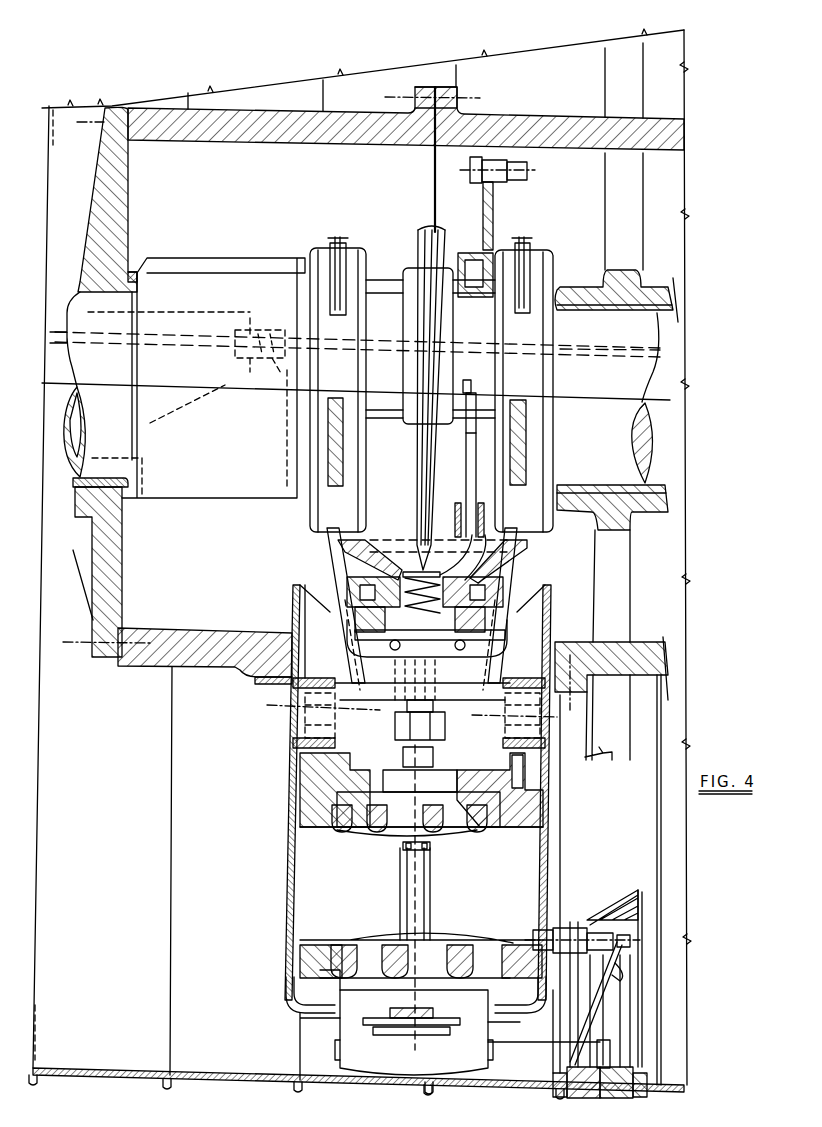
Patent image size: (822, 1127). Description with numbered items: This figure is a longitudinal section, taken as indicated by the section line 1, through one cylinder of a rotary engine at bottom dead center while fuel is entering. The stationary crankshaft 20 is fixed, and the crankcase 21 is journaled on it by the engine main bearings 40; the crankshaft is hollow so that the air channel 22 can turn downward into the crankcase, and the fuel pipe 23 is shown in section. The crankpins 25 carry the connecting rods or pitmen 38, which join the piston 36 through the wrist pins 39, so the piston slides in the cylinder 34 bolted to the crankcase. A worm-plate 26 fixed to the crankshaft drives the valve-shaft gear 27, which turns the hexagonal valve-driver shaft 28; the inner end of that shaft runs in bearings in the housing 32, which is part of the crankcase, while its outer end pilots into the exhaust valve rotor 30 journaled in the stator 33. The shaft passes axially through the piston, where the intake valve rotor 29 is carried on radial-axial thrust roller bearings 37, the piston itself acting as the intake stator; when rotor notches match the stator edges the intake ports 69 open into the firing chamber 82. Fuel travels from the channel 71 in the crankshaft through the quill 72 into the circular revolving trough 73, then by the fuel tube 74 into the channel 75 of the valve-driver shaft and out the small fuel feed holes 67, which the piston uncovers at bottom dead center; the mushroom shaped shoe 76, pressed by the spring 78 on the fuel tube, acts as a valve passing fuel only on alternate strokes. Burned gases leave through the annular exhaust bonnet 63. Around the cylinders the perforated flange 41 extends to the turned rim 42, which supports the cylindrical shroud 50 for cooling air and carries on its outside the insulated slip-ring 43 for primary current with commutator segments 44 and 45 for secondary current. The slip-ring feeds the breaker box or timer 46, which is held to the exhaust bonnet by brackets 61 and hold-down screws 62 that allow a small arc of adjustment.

The section line 4—4 of Fig. 1 is at (460, 33).
The stationary crankshaft 20 is at (653, 435).
The crankcase 21 is at (226, 668).
The air channel 22 is at (150, 423).
The fuel pipe 23 is at (180, 333).
The crankpins 25 is at (407, 413).
The worm-plate 26 is at (420, 238).
The valve-shaft gear 27 is at (337, 543).
The valve-driver shaft 28 is at (432, 892).
The intake valve rotor 29 is at (343, 828).
The exhaust valve rotor 30 is at (483, 950).
The bearing housing 32 is at (493, 587).
The exhaust valve stator 33 is at (305, 940).
The cylinder 34 is at (286, 885).
The piston 36 is at (320, 828).
The radial-axial thrust roller bearings 37 is at (447, 743).
The connecting rods or pitmen 38 is at (332, 240).
The wrist pins 39 is at (357, 700).
The engine main bearings 40 is at (132, 274).
The perforated flange 41 is at (630, 578).
The turned rim 42 is at (650, 1078).
The insulated slip-ring 43 is at (607, 1058).
The commutator segment 44 is at (583, 997).
The commutator segment 45 is at (630, 1028).
The breaker box or timer 46 is at (488, 1067).
The cylindrical shroud 50 is at (690, 1024).
The brackets 61 is at (358, 1086).
The hold-down screws 62 is at (436, 1100).
The exhaust bonnet 63 is at (290, 1012).
The fuel feed holes 67 is at (432, 846).
The intake ports 69 is at (503, 800).
The fuel channel in crankshaft 71 is at (590, 350).
The quill 72 is at (465, 467).
The circular revolving trough 73 is at (453, 503).
The fuel tube 74 is at (470, 565).
The channel in valve-driver shaft 75 is at (410, 810).
The mushroom shaped shoe 76 is at (433, 622).
The spring 78 is at (413, 580).
The firing chamber 82 is at (421, 917).